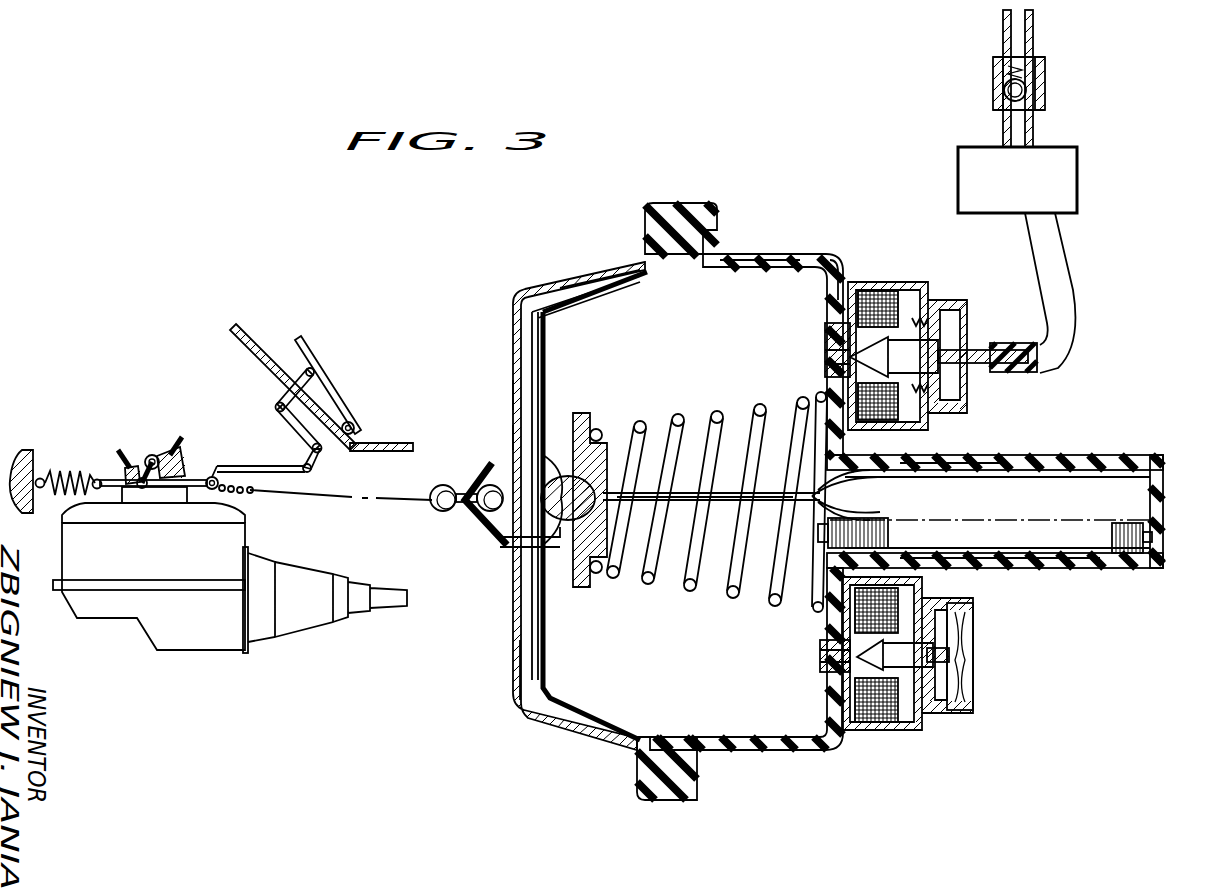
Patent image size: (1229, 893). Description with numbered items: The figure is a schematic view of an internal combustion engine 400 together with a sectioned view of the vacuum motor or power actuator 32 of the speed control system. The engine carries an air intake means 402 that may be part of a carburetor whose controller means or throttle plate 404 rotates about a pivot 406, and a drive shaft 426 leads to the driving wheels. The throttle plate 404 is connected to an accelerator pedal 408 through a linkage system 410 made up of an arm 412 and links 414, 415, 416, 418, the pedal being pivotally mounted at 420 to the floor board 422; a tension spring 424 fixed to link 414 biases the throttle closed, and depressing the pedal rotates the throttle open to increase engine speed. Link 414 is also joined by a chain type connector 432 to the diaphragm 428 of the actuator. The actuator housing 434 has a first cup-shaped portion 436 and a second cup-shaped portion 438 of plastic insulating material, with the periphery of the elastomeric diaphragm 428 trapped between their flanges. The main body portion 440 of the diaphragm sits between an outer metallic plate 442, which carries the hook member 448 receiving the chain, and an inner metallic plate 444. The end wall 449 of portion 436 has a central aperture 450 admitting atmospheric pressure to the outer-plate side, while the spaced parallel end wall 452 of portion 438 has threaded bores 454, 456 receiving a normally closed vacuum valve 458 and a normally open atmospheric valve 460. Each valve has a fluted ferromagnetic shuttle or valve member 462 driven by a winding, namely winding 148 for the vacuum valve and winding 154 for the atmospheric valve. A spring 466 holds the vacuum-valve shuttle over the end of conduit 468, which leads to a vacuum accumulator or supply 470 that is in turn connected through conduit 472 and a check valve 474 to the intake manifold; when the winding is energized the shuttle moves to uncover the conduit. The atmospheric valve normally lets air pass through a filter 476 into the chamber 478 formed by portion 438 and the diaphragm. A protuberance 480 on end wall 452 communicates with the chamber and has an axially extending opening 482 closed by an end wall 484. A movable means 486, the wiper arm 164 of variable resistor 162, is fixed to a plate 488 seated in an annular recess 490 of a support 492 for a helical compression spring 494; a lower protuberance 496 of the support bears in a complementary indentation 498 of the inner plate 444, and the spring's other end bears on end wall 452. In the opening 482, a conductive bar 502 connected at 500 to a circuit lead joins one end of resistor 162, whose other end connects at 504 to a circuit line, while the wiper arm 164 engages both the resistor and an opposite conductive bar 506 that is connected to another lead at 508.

The vacuum motor or power actuator 32 is at (740, 486).
The solenoid or winding 148 is at (870, 290).
The solenoid or winding 154 is at (873, 720).
The variable resistor 162 is at (1122, 523).
The movable wiper arm 164 is at (970, 446).
The internal combustion engine 400 is at (246, 544).
The air intake means 402 is at (178, 448).
The controller means or throttle plate 404 is at (153, 456).
The pivot 406 is at (148, 458).
The accelerator pedal 408 is at (330, 382).
The linkage system 410 is at (320, 467).
The arm 412 is at (185, 460).
The link 414 is at (110, 478).
The link 415 is at (312, 477).
The link 416 is at (292, 420).
The link 418 is at (297, 362).
The pivotal mounting 420 is at (353, 432).
The floor board 422 is at (280, 360).
The tension spring 424 is at (68, 477).
The drive shaft 426 is at (388, 600).
The diaphragm 428 is at (537, 302).
The chain type connector 432 is at (440, 510).
The housing 434 is at (746, 251).
The first cup-shaped portion 436 is at (593, 283).
The second cup-shaped portion 438 is at (805, 257).
The main body portion 440 is at (540, 372).
The outer metallic plate 442 is at (528, 652).
The inner metallic plate 444 is at (543, 392).
The hook member 448 is at (487, 528).
The end wall 449 is at (513, 392).
The central aperture 450 is at (513, 438).
The end wall 452 is at (837, 470).
The threaded bore 454 is at (825, 350).
The threaded bore 456 is at (820, 652).
The normally closed vacuum valve 458 is at (941, 295).
The normally open atmospheric valve 460 is at (920, 737).
The ferromagnetic shuttle or valve member 462 is at (917, 352).
The spring 466 is at (937, 305).
The conduit 468 is at (1070, 348).
The vacuum accumulator or supply 470 is at (1077, 190).
The conduit 472 is at (1033, 128).
The check valve 474 is at (1022, 94).
The filter 476 is at (960, 641).
The chamber 478 is at (701, 332).
The protuberance 480 is at (1090, 460).
The axially extending opening 482 is at (967, 477).
The closing end wall 484 is at (1163, 518).
The movable means 486 is at (731, 483).
The plate 488 is at (638, 427).
The annular recess 490 is at (593, 580).
The support 492 is at (571, 590).
The helical compression spring 494 is at (680, 415).
The lower protuberance 496 is at (596, 445).
The complementary indentation 498 is at (533, 533).
The connection point 500 is at (772, 516).
The conductive bar 502 is at (1070, 553).
The connection point 504 is at (857, 506).
The conductive bar 506 is at (1067, 477).
The connection point 508 is at (815, 398).